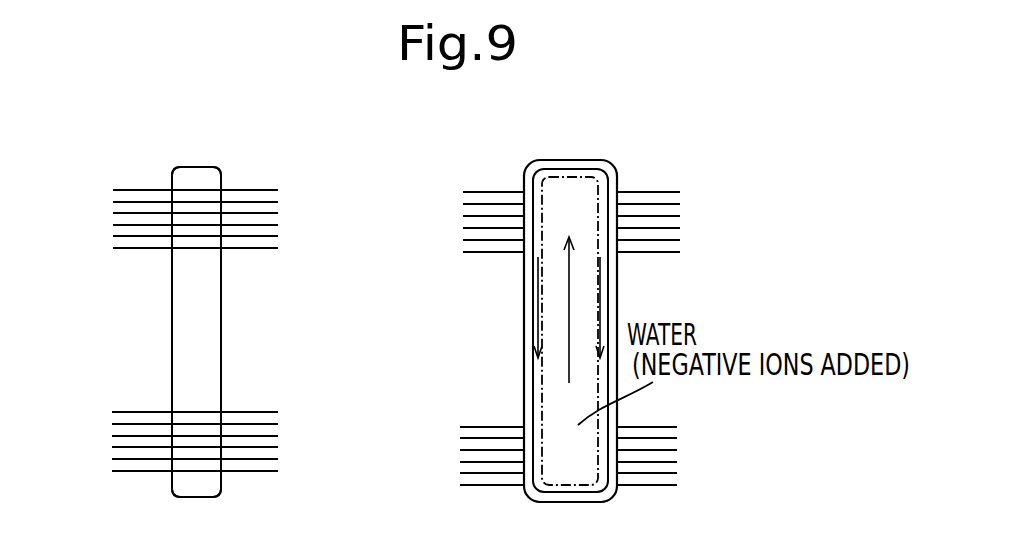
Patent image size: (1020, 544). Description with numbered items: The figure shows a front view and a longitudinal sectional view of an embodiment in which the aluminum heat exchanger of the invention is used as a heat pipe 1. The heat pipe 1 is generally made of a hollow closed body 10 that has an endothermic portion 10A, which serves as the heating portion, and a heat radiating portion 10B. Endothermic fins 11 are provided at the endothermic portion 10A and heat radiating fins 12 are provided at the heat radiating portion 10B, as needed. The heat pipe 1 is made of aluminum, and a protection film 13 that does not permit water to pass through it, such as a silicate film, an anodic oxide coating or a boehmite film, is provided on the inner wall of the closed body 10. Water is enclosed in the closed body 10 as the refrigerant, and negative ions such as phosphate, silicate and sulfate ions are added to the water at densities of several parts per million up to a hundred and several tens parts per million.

The heat pipe 1 is at (94, 267).
The closed body 10 is at (182, 330).
The endothermic portion 10A is at (173, 487).
The heat radiating portion 10B is at (196, 170).
The endothermic fins 11 is at (267, 437).
The heat radiating fins 12 is at (268, 225).
The protection film 13 is at (595, 183).